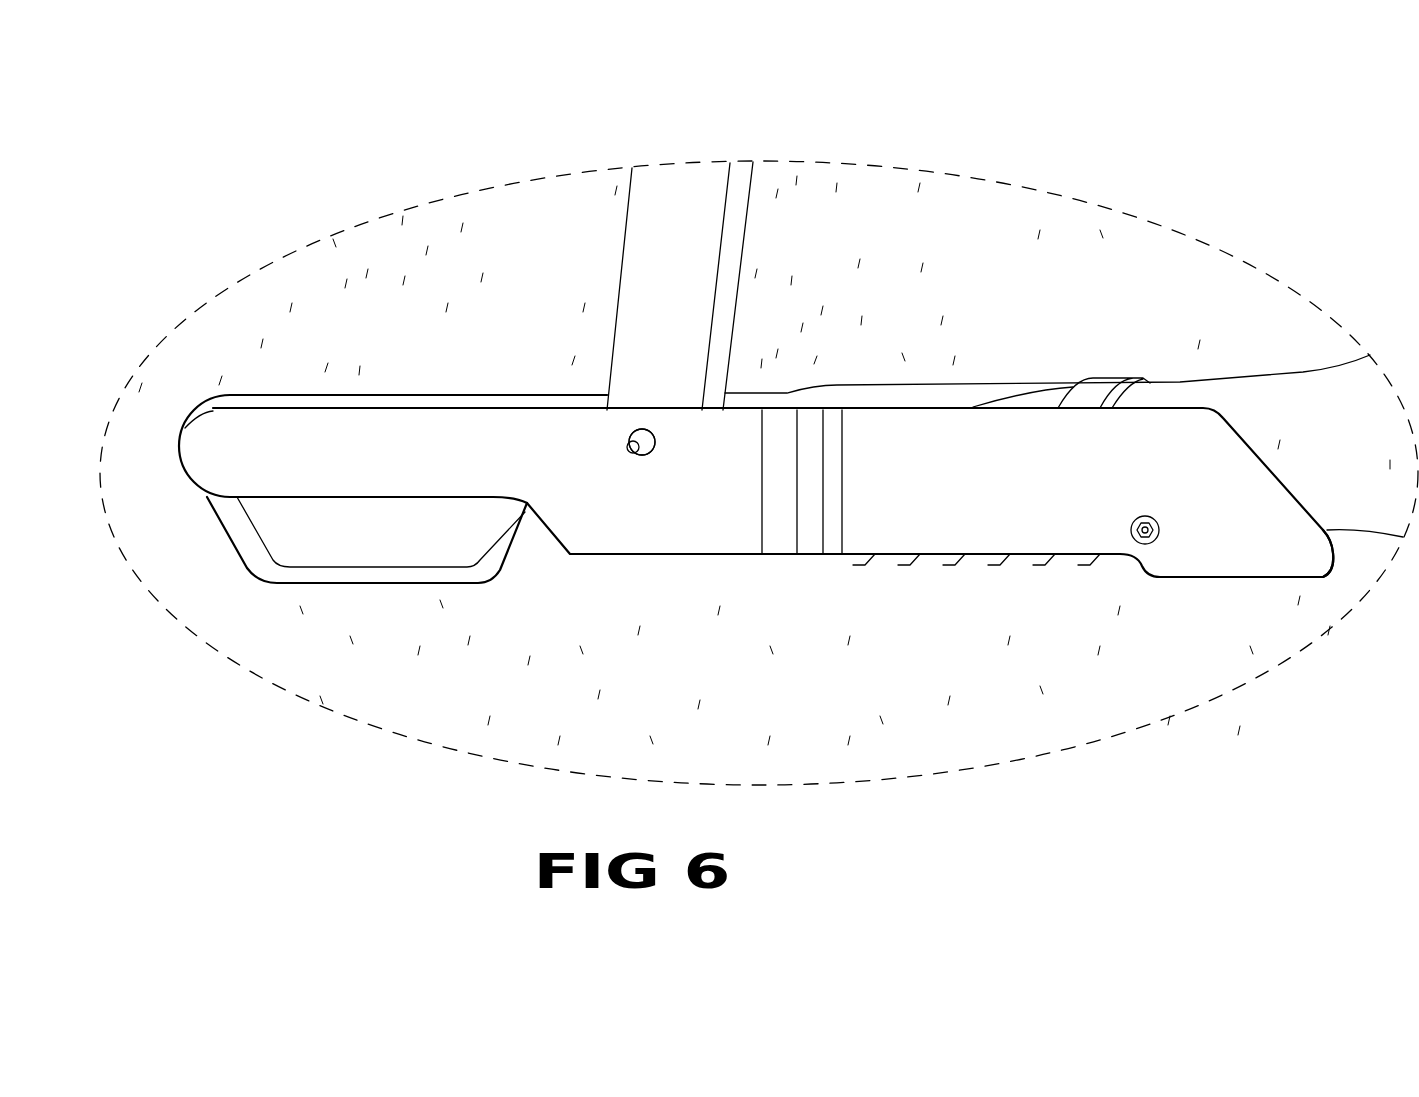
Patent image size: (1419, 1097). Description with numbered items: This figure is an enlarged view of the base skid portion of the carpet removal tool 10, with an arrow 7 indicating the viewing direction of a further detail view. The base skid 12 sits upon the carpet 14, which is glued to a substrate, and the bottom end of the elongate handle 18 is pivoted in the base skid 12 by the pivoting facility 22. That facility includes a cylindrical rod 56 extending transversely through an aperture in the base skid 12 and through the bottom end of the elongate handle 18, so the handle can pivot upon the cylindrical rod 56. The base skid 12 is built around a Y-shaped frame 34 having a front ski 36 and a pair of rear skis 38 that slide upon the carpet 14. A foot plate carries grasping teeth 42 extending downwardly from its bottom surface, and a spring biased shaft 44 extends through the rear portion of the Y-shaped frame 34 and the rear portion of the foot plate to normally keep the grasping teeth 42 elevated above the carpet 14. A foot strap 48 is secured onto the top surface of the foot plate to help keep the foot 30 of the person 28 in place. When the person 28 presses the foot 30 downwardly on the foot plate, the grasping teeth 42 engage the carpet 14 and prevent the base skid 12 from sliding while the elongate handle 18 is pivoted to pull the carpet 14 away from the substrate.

The carpet removal tool 10 is at (467, 108).
The view direction arrow 7 is at (1050, 260).
The base skid 12 is at (383, 396).
The carpet 14 is at (245, 310).
The elongate handle 18 is at (675, 215).
The facility for pivoting 22 is at (647, 457).
The person 28 is at (1238, 381).
The foot 30 is at (1173, 387).
The Y-shaped frame 34 is at (460, 420).
The front ski 36 is at (440, 574).
The rear skis 38 is at (1215, 570).
The grasping teeth 42 is at (985, 565).
The spring biased shaft 44 is at (1140, 518).
The foot strap 48 is at (1100, 390).
The cylindrical rod 56 is at (623, 443).